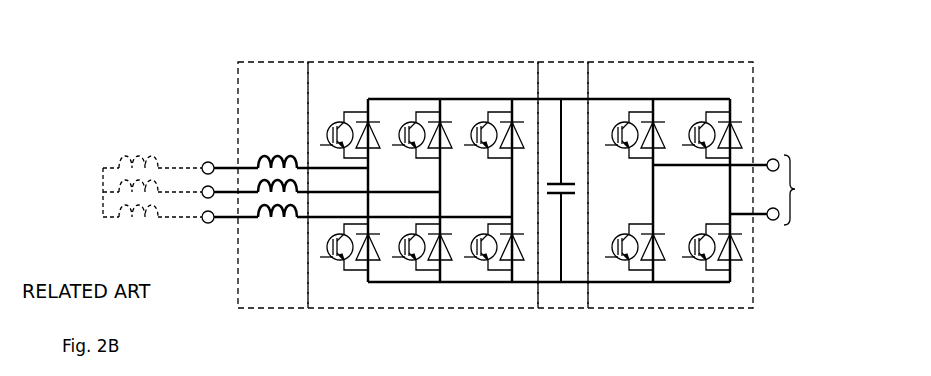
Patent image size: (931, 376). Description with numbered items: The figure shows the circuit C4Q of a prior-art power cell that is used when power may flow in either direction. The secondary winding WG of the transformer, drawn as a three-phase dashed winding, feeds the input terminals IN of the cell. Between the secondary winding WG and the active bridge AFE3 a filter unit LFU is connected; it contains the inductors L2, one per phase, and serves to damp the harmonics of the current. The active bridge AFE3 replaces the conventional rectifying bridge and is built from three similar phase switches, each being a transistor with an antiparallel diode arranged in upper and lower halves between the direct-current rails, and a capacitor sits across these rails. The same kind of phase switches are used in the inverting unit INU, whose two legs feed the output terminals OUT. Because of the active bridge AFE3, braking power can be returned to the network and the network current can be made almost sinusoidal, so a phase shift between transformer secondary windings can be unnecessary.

The secondary winding WG is at (152, 173).
The input terminals IN is at (228, 182).
The line filter inductors L2 is at (385, 176).
The filter unit LFU is at (273, 185).
The active bridge AFE3 is at (423, 185).
The circuit of a power cell C4Q is at (540, 171).
The inverting unit INU is at (670, 185).
The output terminals OUT is at (743, 190).